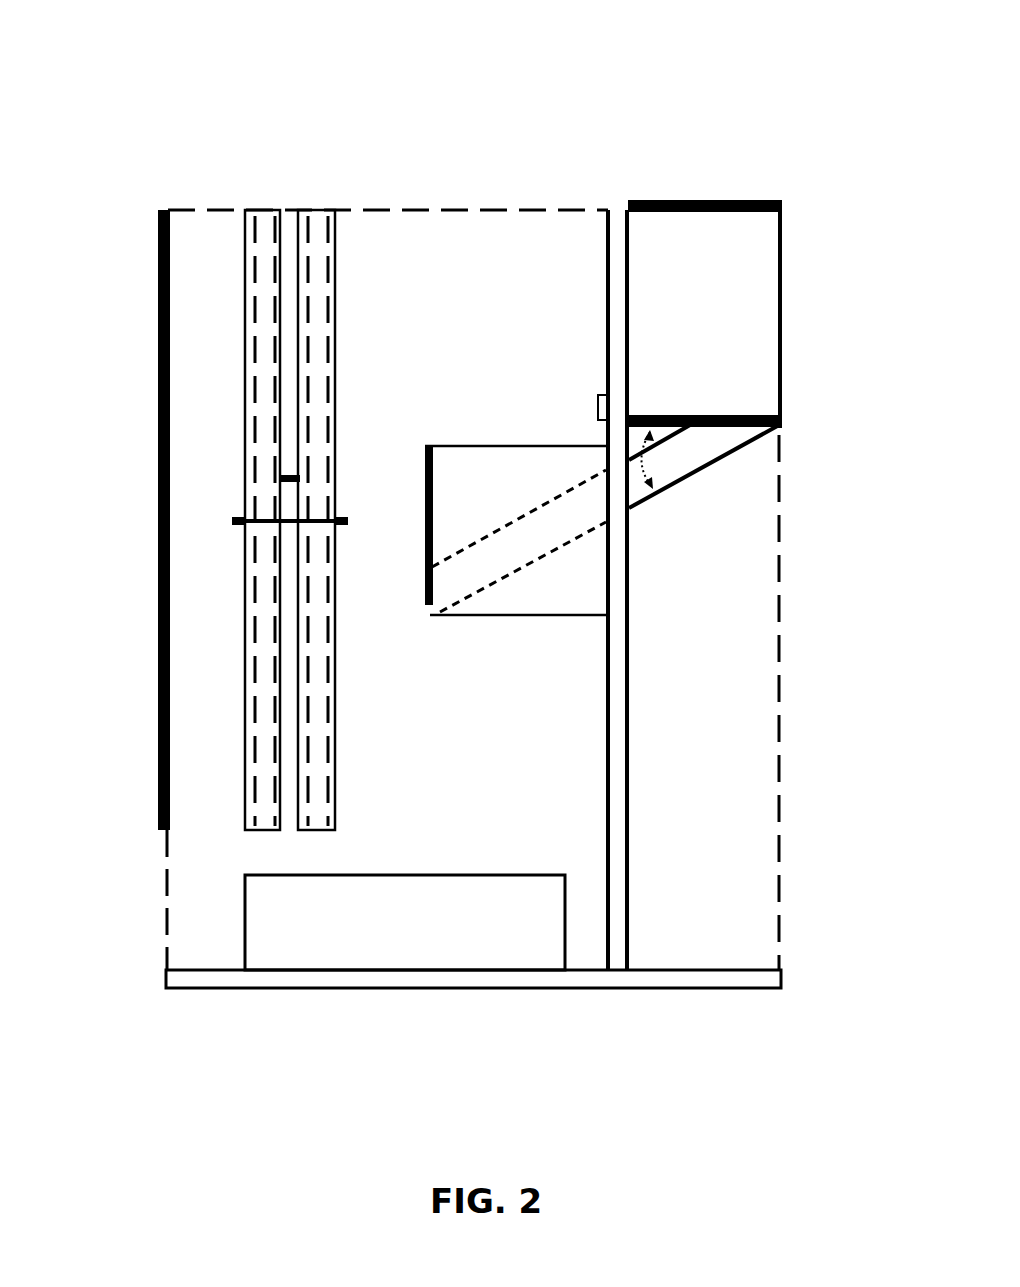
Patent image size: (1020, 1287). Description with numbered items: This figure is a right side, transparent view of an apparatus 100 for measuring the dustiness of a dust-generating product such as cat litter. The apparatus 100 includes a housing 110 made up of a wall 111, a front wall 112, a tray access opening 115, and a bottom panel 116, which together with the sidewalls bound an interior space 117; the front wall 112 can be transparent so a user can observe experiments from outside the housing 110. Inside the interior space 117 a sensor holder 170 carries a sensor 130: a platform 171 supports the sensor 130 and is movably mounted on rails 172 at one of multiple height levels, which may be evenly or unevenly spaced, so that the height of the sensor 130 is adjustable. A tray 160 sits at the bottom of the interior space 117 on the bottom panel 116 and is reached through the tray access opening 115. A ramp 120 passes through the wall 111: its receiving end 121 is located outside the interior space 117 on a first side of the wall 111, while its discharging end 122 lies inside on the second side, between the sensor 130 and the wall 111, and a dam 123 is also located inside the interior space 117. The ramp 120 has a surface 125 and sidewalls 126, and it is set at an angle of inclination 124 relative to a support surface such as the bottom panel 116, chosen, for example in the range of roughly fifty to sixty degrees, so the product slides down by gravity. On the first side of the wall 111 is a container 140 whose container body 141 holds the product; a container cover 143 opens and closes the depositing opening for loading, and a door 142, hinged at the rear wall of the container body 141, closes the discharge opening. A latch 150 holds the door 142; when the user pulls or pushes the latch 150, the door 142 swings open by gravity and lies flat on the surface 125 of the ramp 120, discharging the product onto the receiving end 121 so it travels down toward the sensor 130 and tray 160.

The apparatus 100 is at (506, 36).
The housing 110 is at (421, 570).
The wall 111 is at (626, 210).
The front wall 112 is at (158, 462).
The tray access opening 115 is at (185, 910).
The bottom panel 116 is at (365, 980).
The interior space 117 is at (402, 272).
The ramp 120 is at (484, 514).
The receiving end 121 is at (762, 475).
The discharging end 122 is at (453, 630).
The dam 123 is at (397, 522).
The angle of inclination 124 is at (641, 470).
The surface 125 is at (474, 592).
The sidewalls 126 is at (545, 530).
The sensor 130 is at (292, 492).
The container 140 is at (760, 513).
The container body 141 is at (728, 281).
The door 142 is at (700, 415).
The container cover 143 is at (770, 200).
The latch 150 is at (598, 413).
The tray 160 is at (440, 939).
The sensor holder 170 is at (268, 470).
The platform 171 is at (237, 527).
The rails 172 is at (320, 362).